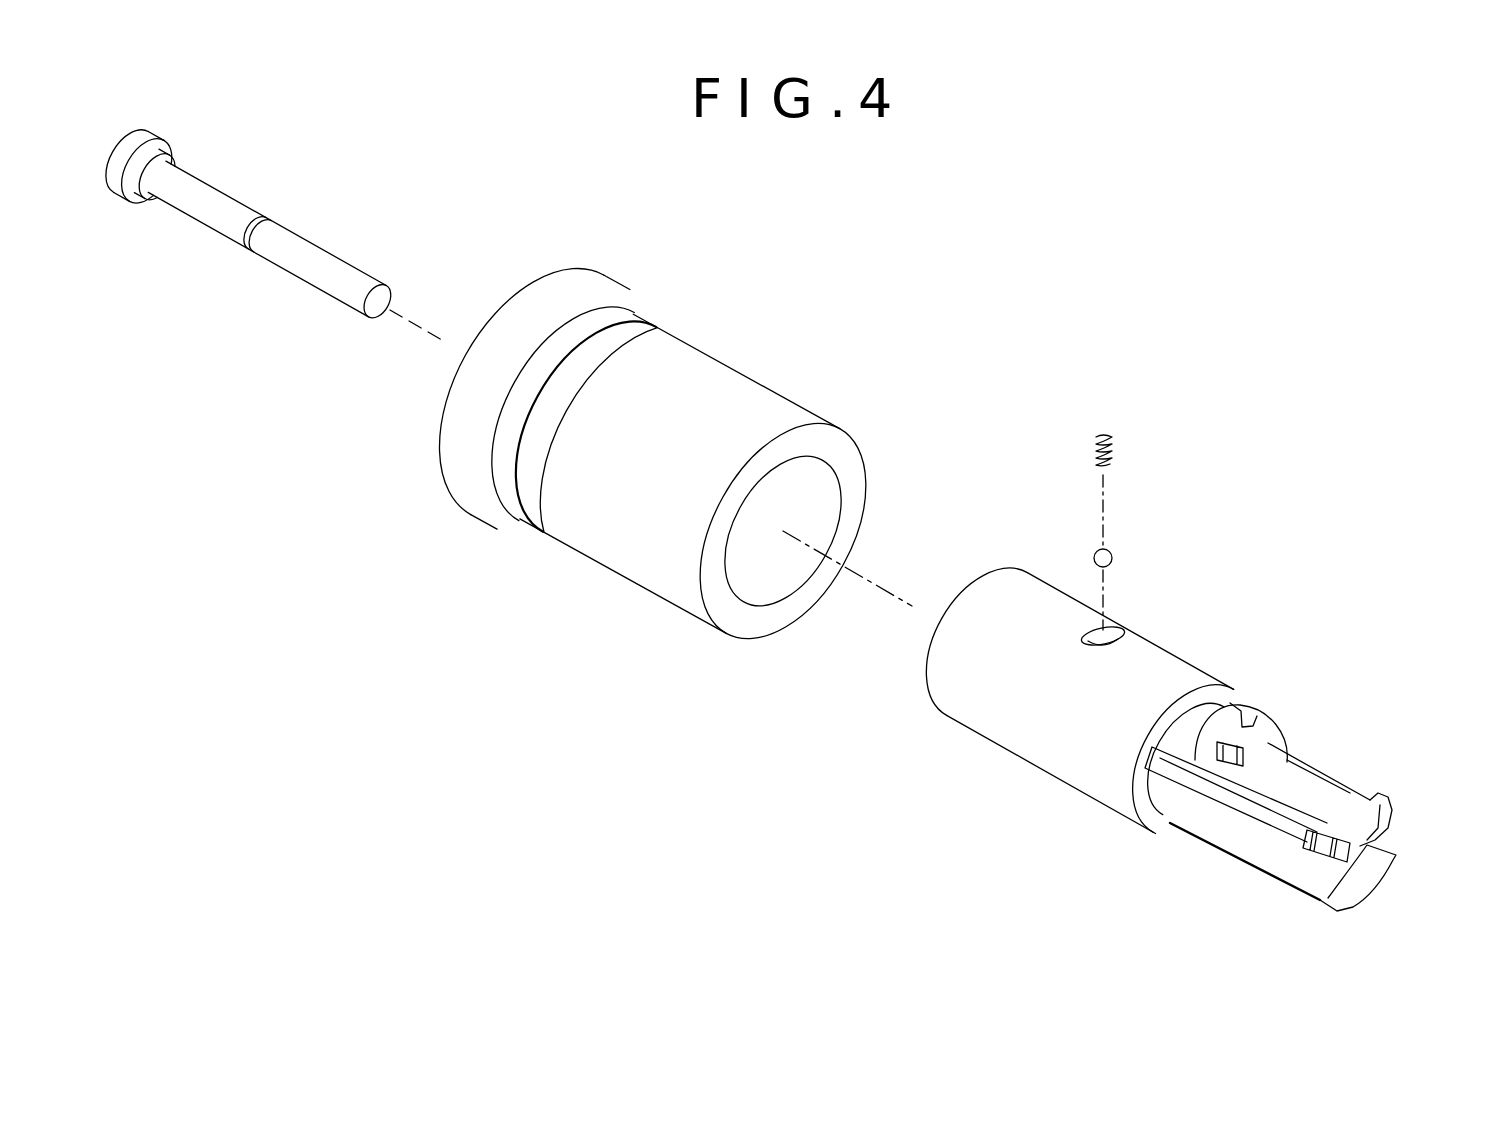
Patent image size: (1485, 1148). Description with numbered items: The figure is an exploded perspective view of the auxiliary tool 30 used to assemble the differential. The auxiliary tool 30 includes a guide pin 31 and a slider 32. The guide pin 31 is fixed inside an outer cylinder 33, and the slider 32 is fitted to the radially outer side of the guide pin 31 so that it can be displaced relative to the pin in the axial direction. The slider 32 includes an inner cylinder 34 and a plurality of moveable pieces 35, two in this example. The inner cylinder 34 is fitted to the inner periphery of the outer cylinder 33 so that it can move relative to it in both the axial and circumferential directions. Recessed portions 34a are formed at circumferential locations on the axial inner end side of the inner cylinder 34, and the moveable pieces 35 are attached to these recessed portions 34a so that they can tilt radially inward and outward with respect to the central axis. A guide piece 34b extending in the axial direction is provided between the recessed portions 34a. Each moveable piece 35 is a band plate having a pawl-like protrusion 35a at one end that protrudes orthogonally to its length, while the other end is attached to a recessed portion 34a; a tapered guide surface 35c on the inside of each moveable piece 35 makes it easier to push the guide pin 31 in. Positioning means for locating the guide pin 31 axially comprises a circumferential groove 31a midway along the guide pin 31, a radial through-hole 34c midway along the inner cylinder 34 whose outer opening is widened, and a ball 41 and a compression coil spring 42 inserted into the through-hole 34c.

The auxiliary tool 30 is at (491, 762).
The guide pin 31 is at (271, 330).
The circumferential groove 31a is at (303, 204).
The slider 32 is at (920, 740).
The outer cylinder 33 is at (577, 567).
The inner cylinder 34 is at (1148, 739).
The recessed portions 34a is at (1243, 692).
The guide piece 34b is at (1240, 840).
The through-hole 34c is at (1124, 630).
The moveable pieces 35 is at (1311, 762).
The pawl-like protrusion 35a is at (1390, 803).
The tapered guide surface 35c is at (1275, 737).
The ball 41 is at (1115, 553).
The compression coil spring 42 is at (1113, 440).